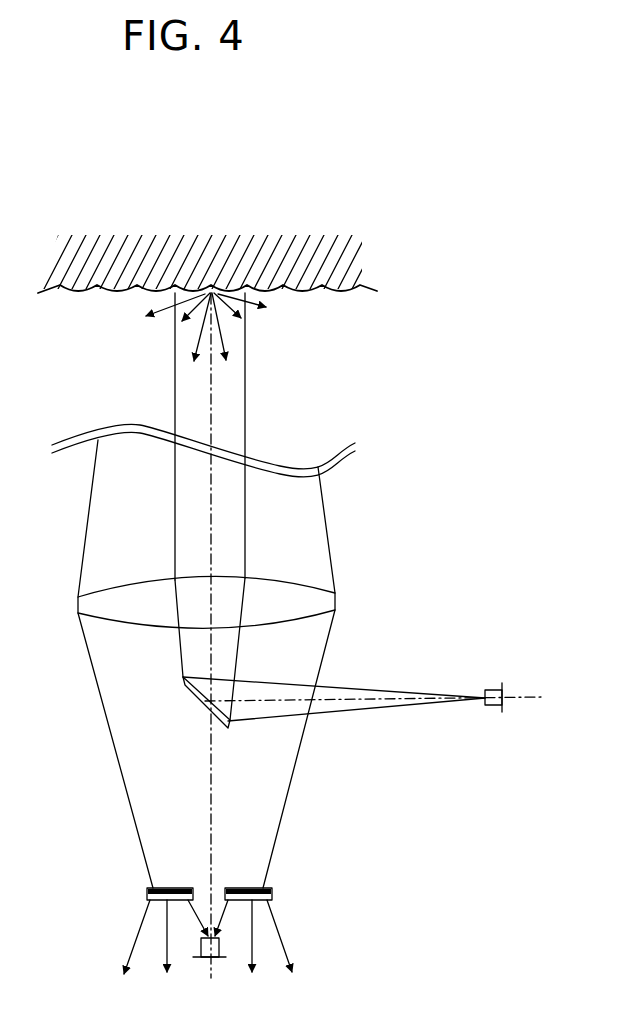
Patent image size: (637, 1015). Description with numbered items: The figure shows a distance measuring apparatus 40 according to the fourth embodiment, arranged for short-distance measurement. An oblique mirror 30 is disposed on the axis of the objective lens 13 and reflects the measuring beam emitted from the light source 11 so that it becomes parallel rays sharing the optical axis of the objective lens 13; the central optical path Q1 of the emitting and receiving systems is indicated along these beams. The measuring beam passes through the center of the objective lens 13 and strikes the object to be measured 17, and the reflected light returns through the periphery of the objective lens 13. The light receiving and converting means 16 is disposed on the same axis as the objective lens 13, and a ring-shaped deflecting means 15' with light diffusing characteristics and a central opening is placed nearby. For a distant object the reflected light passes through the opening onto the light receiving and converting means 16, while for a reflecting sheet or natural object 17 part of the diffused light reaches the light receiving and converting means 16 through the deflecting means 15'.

The object to be measured 17 is at (355, 260).
The optical distance measuring system 40 is at (431, 536).
The objective lens 13 is at (325, 602).
The oblique mirror 30 is at (193, 693).
The light source 11 is at (493, 688).
The central optical path Q1 is at (333, 702).
The deflecting means 15' is at (243, 931).
The light receiving and converting means 16 is at (203, 958).